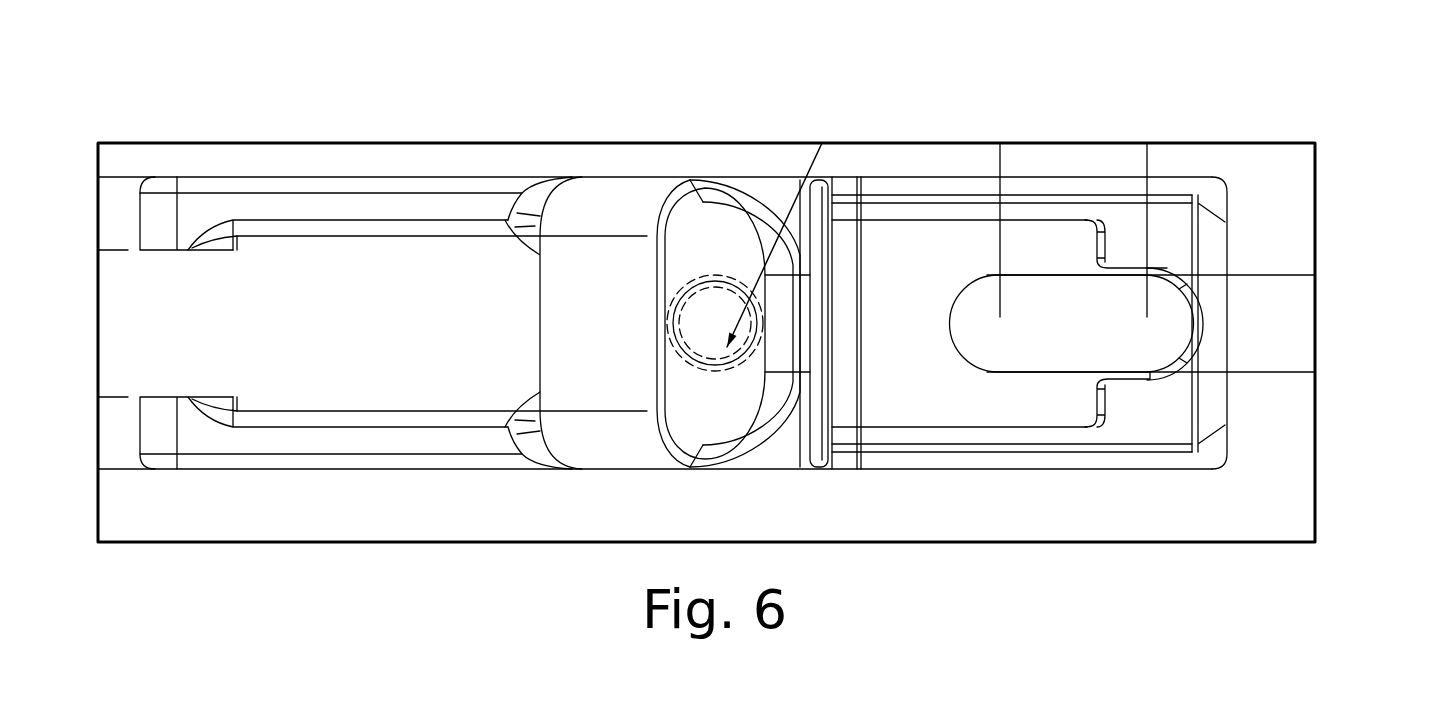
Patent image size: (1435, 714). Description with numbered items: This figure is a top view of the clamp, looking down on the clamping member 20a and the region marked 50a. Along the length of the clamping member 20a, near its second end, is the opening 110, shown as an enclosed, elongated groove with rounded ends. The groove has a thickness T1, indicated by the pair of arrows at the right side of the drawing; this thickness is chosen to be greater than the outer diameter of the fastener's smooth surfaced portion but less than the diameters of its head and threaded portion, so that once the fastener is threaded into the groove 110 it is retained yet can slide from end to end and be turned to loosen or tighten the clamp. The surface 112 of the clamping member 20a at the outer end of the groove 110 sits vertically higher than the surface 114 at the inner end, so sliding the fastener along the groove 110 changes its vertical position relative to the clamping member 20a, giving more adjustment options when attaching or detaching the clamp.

The clamping member 20a is at (380, 193).
The housing 50a is at (627, 197).
The opening 110 is at (1033, 372).
The surface 112 is at (1167, 249).
The surface 114 is at (1038, 243).
The thickness T1 is at (1269, 410).